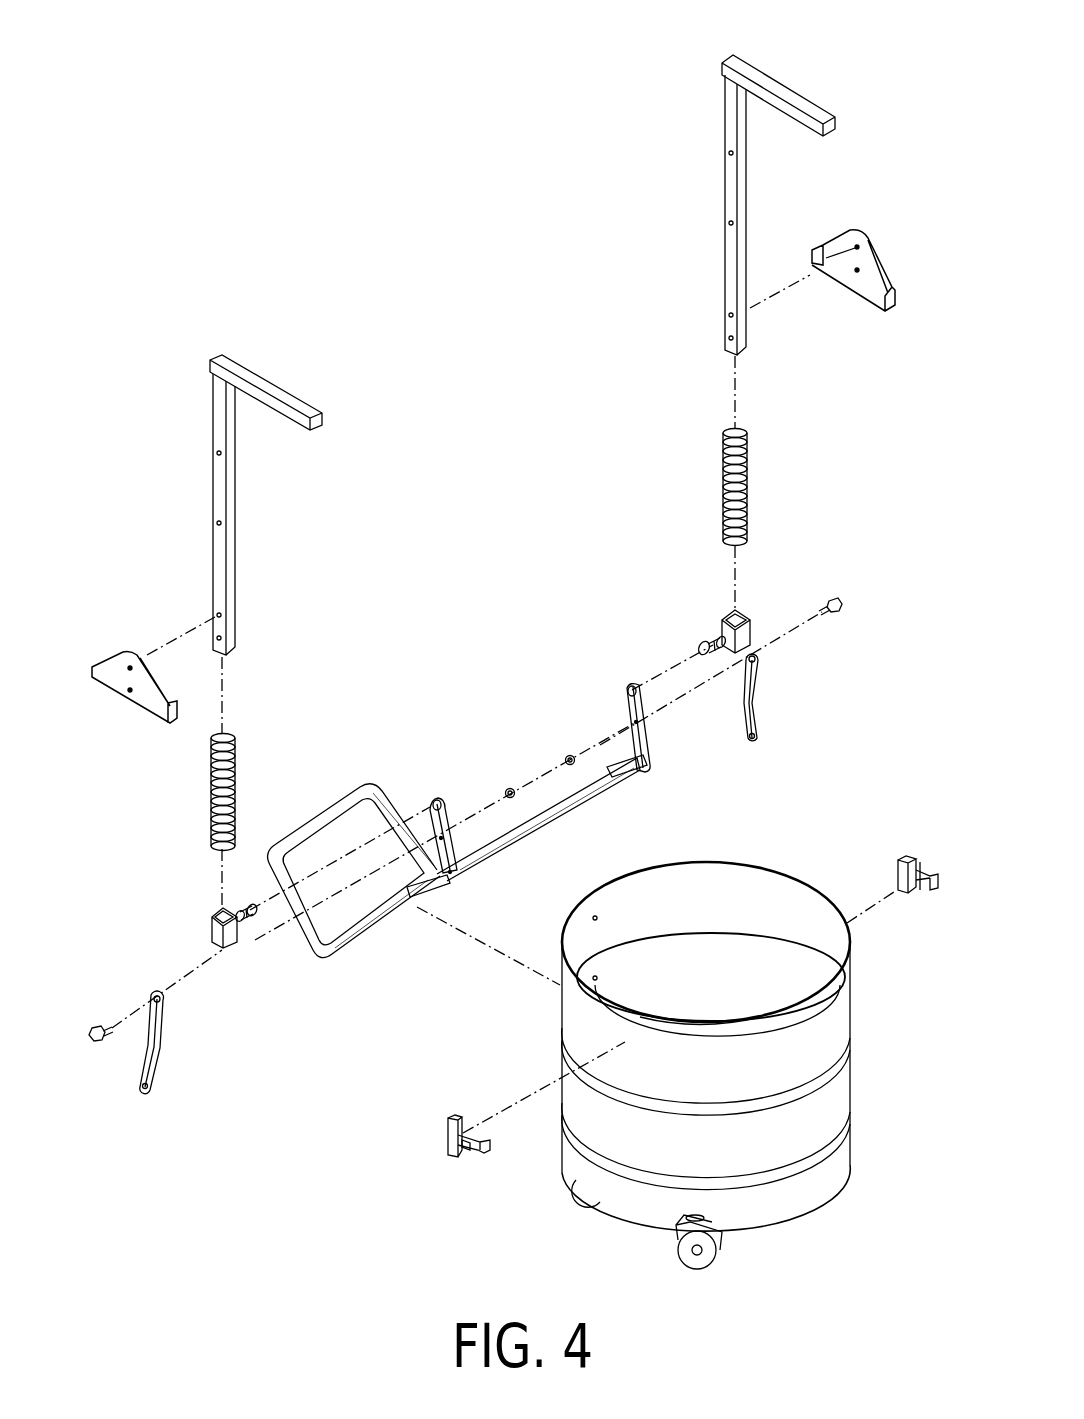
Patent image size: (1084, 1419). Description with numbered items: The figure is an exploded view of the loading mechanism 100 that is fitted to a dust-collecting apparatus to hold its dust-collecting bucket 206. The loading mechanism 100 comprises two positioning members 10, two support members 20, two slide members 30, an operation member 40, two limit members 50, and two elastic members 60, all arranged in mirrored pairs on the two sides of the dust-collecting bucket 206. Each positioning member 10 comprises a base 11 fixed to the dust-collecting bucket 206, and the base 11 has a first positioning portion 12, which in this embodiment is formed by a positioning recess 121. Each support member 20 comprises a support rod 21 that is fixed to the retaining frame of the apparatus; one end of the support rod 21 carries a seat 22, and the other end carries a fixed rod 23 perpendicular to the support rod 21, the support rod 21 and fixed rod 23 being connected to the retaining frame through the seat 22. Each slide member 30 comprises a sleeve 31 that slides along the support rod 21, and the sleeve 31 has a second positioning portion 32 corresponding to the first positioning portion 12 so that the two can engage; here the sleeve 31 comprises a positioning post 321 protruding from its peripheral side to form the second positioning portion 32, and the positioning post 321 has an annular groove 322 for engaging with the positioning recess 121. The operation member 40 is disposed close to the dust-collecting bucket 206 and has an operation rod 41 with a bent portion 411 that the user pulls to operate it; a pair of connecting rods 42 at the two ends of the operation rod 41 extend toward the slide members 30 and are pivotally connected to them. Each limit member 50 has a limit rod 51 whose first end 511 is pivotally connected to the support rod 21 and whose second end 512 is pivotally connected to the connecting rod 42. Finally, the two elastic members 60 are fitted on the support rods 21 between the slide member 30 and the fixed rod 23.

The loading mechanism 100 is at (430, 243).
The positioning member 10 is at (922, 855).
The base 11 is at (453, 1153).
The first positioning portion 12 is at (485, 1145).
The positioning recess 121 is at (462, 1153).
The support member 20 is at (715, 262).
The support rod 21 is at (731, 183).
The seat 22 is at (872, 272).
The fixed rod 23 is at (800, 103).
The slide member 30 is at (746, 603).
The sleeve 31 is at (753, 617).
The second positioning portion 32 is at (712, 642).
The positioning post 321 is at (723, 613).
The annular groove 322 is at (722, 620).
The operation member 40 is at (383, 945).
The operation rod 41 is at (503, 850).
The bent portion 411 is at (337, 813).
The connecting rod 42 is at (648, 740).
The limit member 50 is at (778, 708).
The limit rod 51 is at (747, 710).
The first end 511 is at (760, 738).
The second end 512 is at (757, 655).
The elastic member 60 is at (765, 457).
The dust-collecting bucket 206 is at (823, 1010).